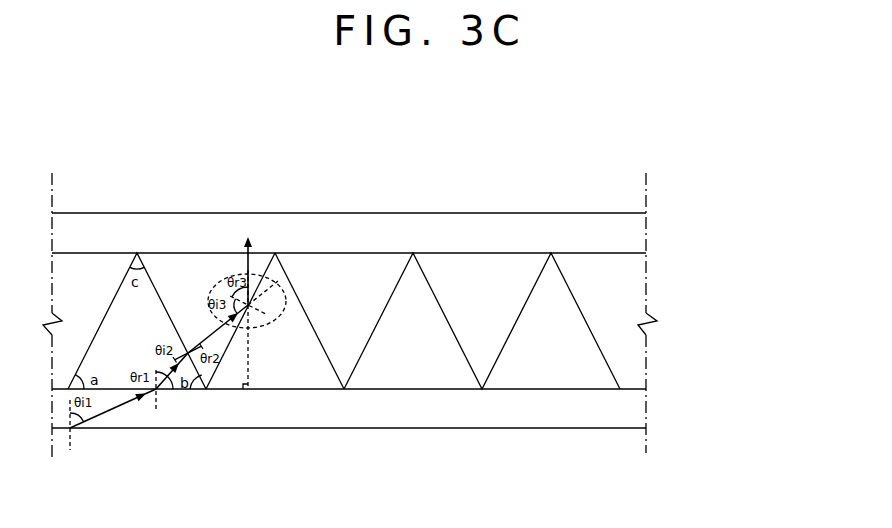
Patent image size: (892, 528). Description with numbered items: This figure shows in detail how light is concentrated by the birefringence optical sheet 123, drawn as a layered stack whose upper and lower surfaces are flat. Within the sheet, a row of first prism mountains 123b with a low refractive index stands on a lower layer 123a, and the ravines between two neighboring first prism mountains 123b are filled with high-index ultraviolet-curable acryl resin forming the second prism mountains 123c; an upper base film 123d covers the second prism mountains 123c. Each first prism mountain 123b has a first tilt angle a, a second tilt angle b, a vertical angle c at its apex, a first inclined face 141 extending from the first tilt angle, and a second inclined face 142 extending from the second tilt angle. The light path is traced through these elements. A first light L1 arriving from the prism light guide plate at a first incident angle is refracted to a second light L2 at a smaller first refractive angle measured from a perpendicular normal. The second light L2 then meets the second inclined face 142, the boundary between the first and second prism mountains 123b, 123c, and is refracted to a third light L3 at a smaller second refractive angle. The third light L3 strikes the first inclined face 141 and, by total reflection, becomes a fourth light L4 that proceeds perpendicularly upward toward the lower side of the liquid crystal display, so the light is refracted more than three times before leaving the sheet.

The birefringence optical sheet 123 is at (748, 199).
The first layer 123a is at (628, 414).
The first prism mountains 123b is at (583, 362).
The second prism mountains 123c is at (628, 296).
The upper base film 123d is at (628, 232).
The first inclined face 141 is at (208, 388).
The second inclined face 142 is at (318, 340).
The first light L1 is at (113, 409).
The second light L2 is at (172, 374).
The third light L3 is at (215, 335).
The fourth light L4 is at (247, 263).